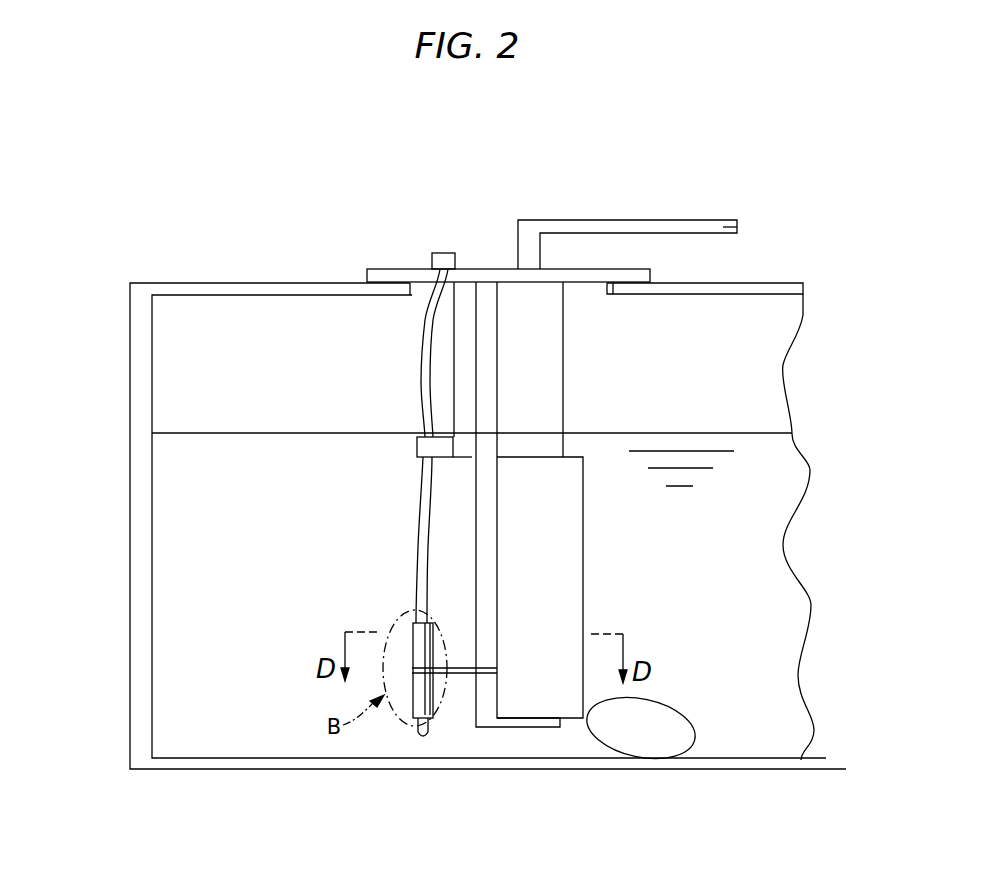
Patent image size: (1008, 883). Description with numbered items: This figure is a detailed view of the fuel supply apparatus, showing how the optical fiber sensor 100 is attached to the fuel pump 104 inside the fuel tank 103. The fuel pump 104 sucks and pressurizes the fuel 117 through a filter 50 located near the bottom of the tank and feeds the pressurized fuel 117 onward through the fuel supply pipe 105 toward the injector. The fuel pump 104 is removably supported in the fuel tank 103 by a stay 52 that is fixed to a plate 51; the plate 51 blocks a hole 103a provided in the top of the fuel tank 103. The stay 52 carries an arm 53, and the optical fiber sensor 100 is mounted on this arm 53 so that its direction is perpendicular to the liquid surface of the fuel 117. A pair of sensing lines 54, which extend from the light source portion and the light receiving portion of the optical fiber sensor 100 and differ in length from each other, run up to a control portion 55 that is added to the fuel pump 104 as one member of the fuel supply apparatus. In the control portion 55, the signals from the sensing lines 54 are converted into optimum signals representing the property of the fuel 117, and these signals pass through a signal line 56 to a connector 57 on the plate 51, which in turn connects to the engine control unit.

The filter 50 is at (616, 730).
The plate 51 is at (400, 276).
The stay 52 is at (487, 406).
The arm 53 is at (445, 676).
The sensing lines 54 is at (413, 510).
The control portion 55 is at (417, 446).
The signal line 56 is at (419, 380).
The connector 57 is at (440, 260).
The optical fiber sensor 100 is at (418, 692).
The fuel tank 103 is at (200, 762).
The hole 103a is at (572, 290).
The fuel pump 104 is at (520, 695).
The fuel supply pipe 105 is at (723, 227).
The fuel 117 is at (303, 700).